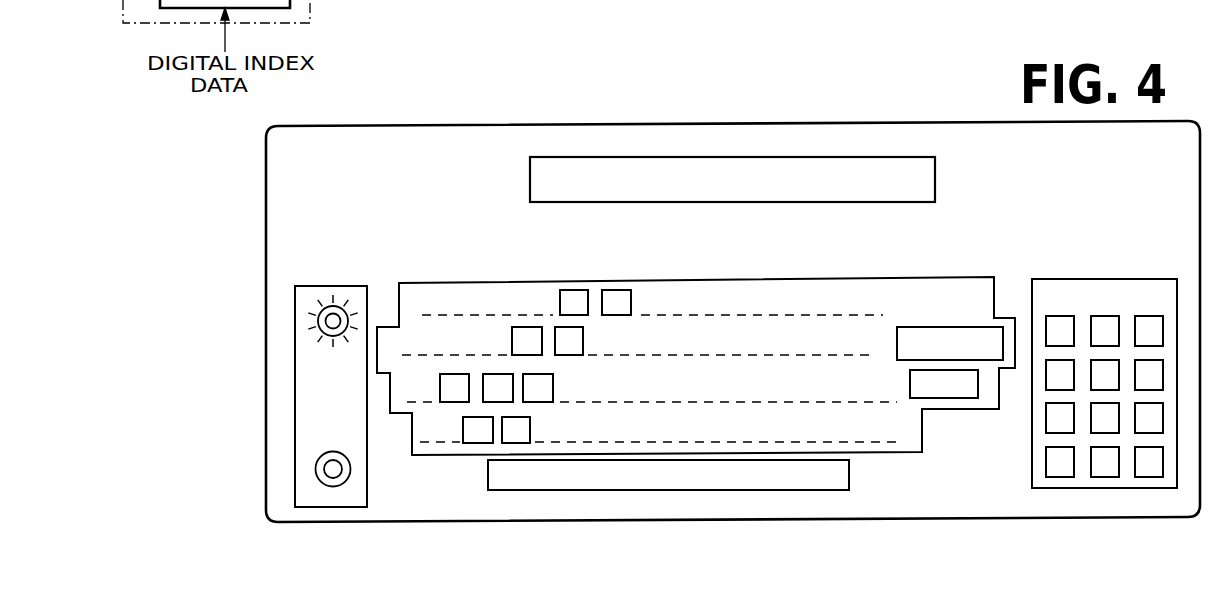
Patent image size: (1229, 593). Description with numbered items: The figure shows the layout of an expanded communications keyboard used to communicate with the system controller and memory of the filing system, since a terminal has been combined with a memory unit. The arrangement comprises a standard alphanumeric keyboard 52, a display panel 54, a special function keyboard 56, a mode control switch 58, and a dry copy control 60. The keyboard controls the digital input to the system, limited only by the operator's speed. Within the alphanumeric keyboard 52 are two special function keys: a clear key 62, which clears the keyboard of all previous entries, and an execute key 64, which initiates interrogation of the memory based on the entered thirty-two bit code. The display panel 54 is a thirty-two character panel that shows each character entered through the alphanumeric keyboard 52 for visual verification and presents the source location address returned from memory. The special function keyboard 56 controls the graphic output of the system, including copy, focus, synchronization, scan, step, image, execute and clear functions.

The standard alphanumeric keyboard 52 is at (715, 307).
The display panel 54 is at (705, 167).
The special function keyboard 56 is at (1142, 289).
The mode control switch 58 is at (318, 457).
The dry copy control 60 is at (325, 302).
The clear key 62 is at (967, 397).
The execute key 64 is at (942, 327).